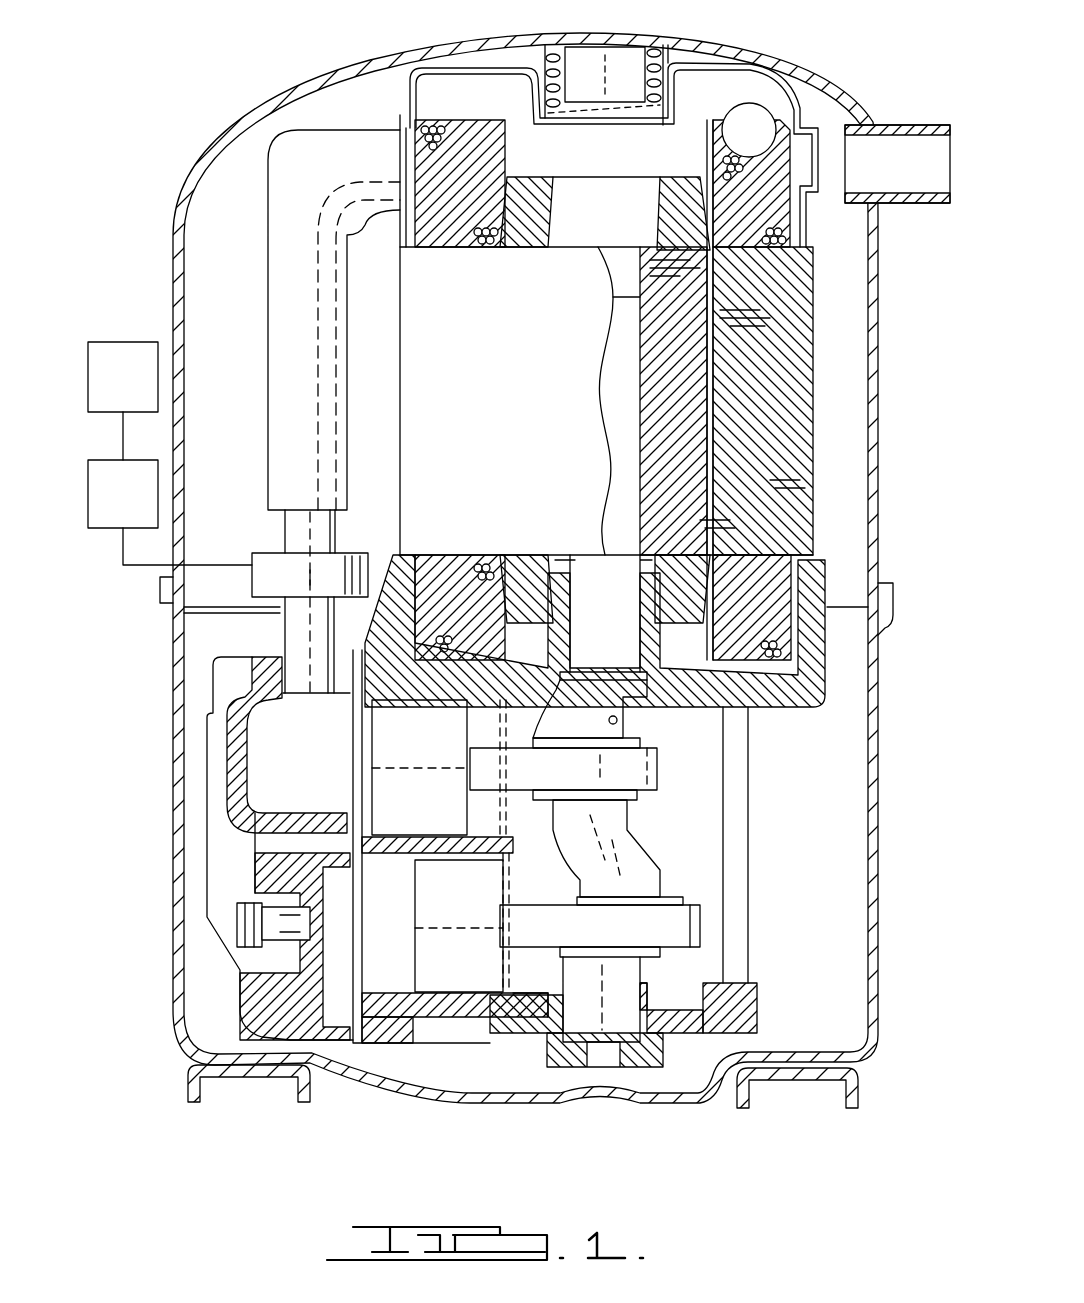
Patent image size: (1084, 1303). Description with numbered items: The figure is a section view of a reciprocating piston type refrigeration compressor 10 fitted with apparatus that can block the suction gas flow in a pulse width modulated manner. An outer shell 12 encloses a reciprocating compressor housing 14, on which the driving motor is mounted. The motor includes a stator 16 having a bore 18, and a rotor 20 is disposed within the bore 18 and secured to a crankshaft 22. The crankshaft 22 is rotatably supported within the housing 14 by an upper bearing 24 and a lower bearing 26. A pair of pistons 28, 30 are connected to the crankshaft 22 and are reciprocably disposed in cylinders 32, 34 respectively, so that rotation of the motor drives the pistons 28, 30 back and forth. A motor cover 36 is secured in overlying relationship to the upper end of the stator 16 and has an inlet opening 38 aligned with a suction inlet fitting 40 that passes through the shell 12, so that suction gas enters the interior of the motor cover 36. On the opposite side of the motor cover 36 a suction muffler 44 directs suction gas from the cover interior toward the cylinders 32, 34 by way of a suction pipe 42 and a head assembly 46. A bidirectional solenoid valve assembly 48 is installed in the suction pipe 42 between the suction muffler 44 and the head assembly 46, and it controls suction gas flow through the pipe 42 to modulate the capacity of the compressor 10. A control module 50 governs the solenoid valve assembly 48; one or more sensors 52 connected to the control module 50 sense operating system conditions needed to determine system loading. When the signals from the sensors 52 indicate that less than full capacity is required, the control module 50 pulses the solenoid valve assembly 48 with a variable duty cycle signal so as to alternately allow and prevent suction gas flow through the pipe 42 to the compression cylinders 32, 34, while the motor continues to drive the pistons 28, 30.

The reciprocating piston type refrigeration compressor 10 is at (232, 72).
The outer shell 12 is at (178, 192).
The reciprocating compressor housing 14 is at (762, 776).
The stator 16 is at (805, 270).
The bore 18 is at (702, 352).
The rotor 20 is at (648, 458).
The crankshaft 22 is at (608, 378).
The upper bearing 24 is at (618, 588).
The lower bearing 26 is at (648, 992).
The piston 28 is at (440, 780).
The piston 30 is at (478, 930).
The cylinder 32 is at (485, 842).
The cylinder 34 is at (398, 982).
The motor cover 36 is at (765, 72).
The inlet opening 38 is at (812, 145).
The suction inlet fitting 40 is at (897, 126).
The suction pipe 42 is at (290, 532).
The suction muffler 44 is at (272, 322).
The head assembly 46 is at (210, 883).
The bidirectional solenoid valve assembly 48 is at (342, 570).
The control module 50 is at (113, 518).
The sensors 52 is at (122, 352).